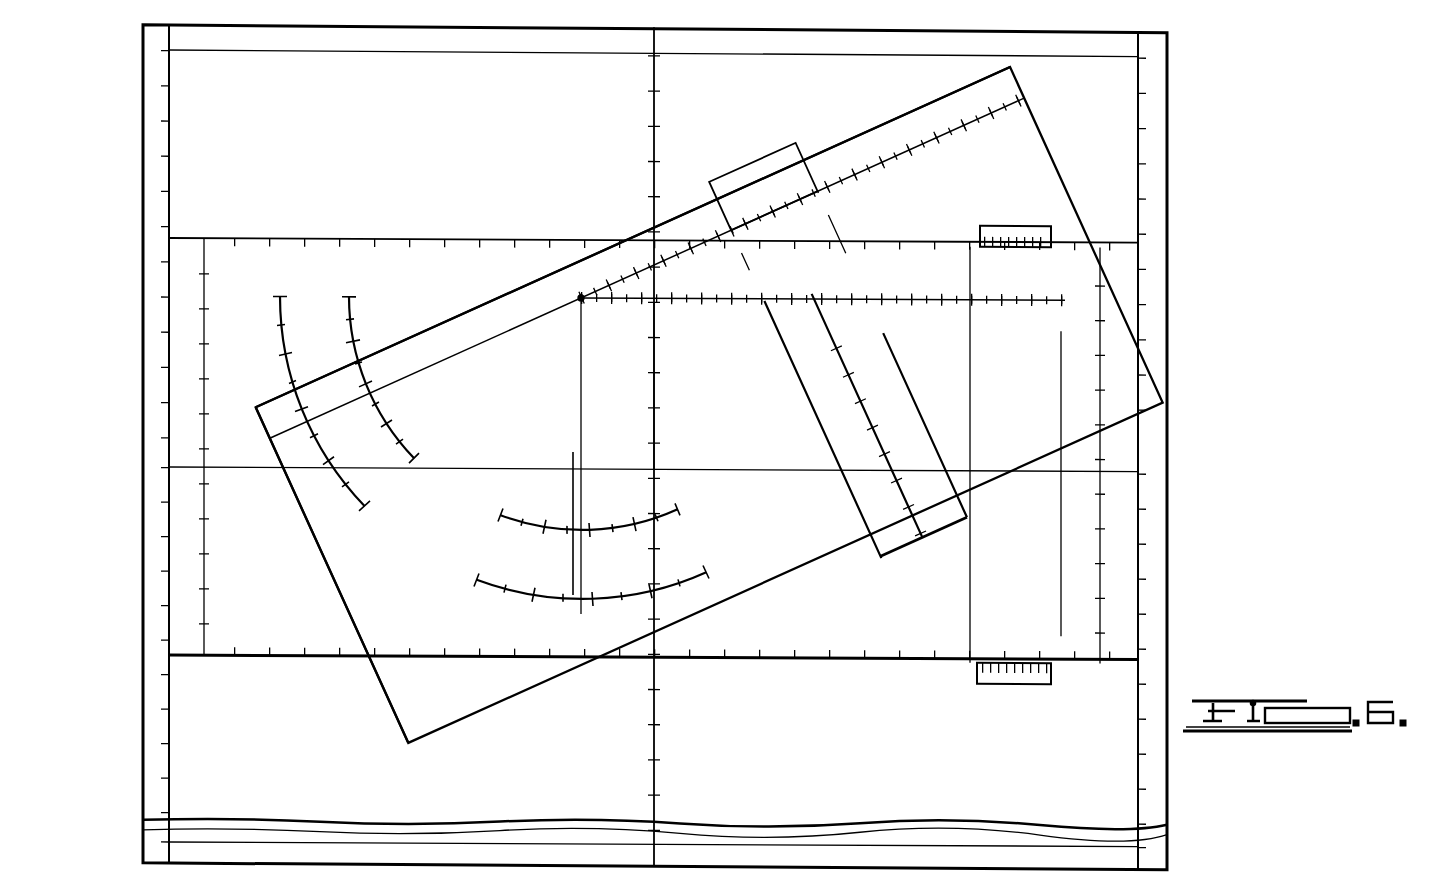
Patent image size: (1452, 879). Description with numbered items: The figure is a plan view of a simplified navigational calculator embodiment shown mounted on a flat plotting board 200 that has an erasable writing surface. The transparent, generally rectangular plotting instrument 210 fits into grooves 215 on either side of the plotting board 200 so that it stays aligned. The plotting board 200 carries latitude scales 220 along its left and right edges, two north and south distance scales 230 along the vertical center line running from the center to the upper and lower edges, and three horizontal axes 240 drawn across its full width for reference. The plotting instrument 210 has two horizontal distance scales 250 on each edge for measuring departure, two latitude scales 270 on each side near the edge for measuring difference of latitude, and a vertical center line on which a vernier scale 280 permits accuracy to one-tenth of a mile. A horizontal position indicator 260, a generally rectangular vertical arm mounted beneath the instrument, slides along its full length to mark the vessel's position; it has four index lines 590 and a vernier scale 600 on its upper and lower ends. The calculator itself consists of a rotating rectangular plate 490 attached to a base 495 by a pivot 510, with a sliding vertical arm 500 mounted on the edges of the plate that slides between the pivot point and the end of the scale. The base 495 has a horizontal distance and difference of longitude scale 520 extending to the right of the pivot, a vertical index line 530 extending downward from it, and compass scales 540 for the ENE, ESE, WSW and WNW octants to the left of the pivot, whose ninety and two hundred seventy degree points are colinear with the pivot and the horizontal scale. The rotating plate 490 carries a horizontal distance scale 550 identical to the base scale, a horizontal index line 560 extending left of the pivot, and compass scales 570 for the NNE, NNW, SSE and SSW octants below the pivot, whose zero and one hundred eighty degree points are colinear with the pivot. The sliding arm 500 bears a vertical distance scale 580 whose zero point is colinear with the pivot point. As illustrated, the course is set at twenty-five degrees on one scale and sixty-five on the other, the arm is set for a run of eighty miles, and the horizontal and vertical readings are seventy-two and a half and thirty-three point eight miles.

The plotting board 200 is at (622, 771).
The plotting instrument 210 is at (920, 521).
The grooves 215 is at (654, 447).
The latitude scales 220 is at (655, 447).
The north and south distance scales 230 is at (706, 446).
The horizontal axes 240 is at (653, 448).
The horizontal distance scales 250 is at (653, 445).
The horizontal position indicator 260 is at (950, 496).
The latitude scales 270 is at (653, 450).
The vernier scale 280 is at (688, 385).
The rotating rectangular plate 490 is at (709, 406).
The base 495 is at (332, 575).
The sliding vertical arm 500 is at (782, 188).
The pivot 510 is at (602, 246).
The horizontal distance and difference of longitude scale 520 is at (827, 317).
The vertical index line 530 is at (538, 456).
The compass scales 540 is at (344, 360).
The horizontal distance scale 550 is at (633, 235).
The horizontal index line 560 is at (650, 266).
The compass scales 570 is at (595, 522).
The vertical distance scale 580 is at (865, 410).
The index lines 590 is at (988, 425).
The vernier scale 600 is at (1014, 454).